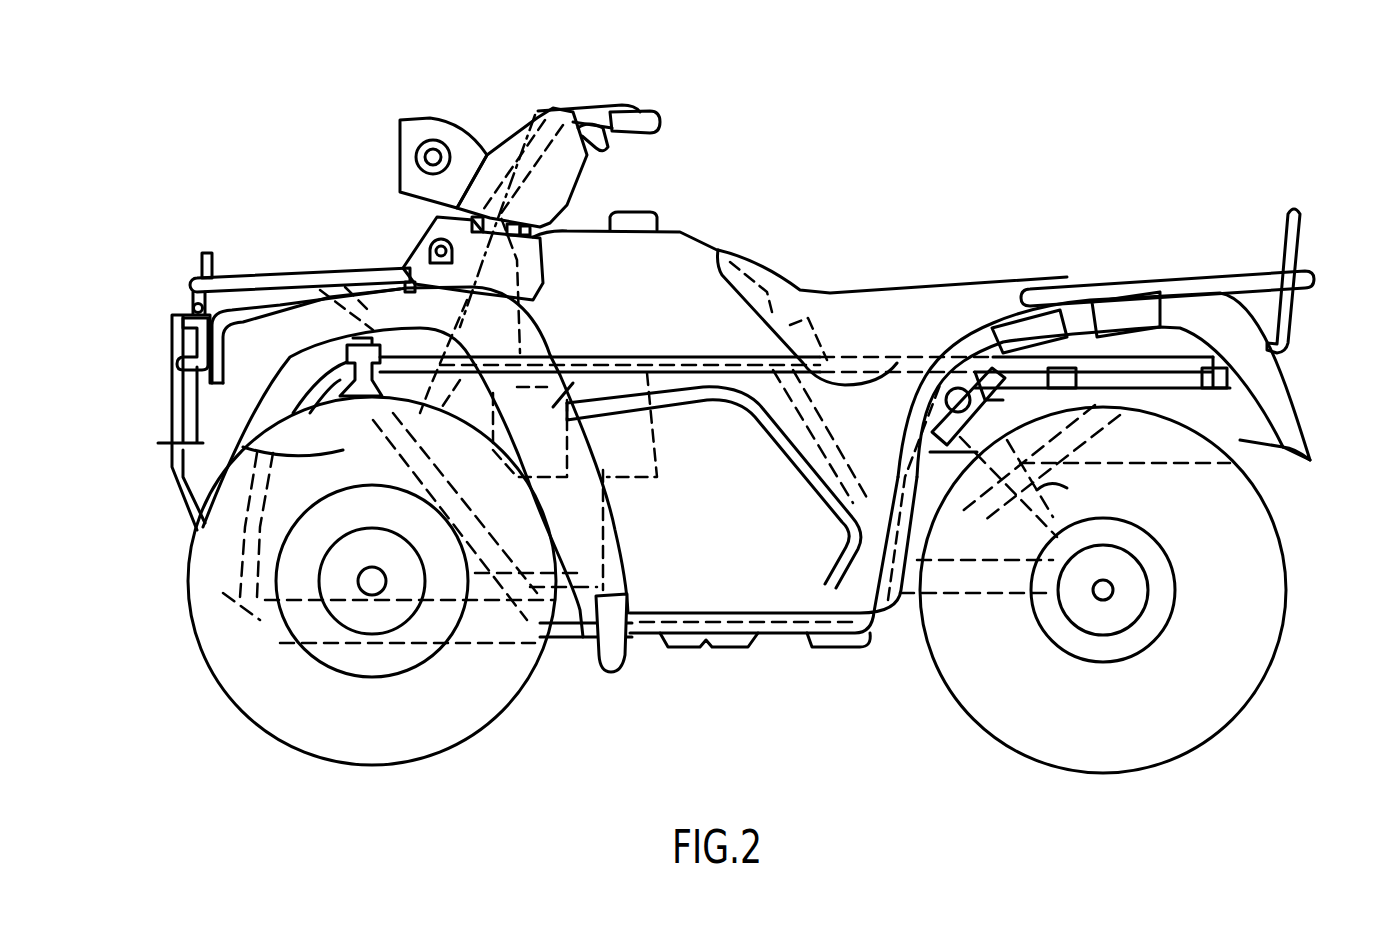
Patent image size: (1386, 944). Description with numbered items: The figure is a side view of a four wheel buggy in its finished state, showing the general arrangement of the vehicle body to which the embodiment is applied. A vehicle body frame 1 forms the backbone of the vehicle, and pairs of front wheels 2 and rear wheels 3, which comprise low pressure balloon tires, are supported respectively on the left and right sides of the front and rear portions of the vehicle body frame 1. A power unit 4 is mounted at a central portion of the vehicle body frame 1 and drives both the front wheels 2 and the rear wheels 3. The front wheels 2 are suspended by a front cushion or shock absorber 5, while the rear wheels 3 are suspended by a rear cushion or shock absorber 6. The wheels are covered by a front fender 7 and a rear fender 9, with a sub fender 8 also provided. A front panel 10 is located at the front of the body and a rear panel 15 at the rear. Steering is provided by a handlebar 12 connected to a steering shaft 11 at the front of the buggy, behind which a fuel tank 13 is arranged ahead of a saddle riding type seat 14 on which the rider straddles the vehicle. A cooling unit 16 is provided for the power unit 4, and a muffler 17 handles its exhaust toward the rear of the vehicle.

The vehicle body frame 1 is at (580, 656).
The front wheels 2 is at (283, 720).
The rear wheels 3 is at (997, 710).
The power unit 4 is at (777, 585).
The front cushion 5 is at (243, 448).
The rear cushion 6 is at (1067, 488).
The front fender 7 is at (273, 330).
The sub fender 8 is at (697, 637).
The rear fender 9 is at (980, 350).
The front panel 10 is at (402, 263).
The steering shaft 11 is at (430, 233).
The handlebar 12 is at (655, 118).
The fuel tank 13 is at (680, 255).
The saddle riding type seat 14 is at (837, 313).
The rear panel 15 is at (887, 400).
The cooling unit 16 is at (578, 350).
The muffler 17 is at (1263, 447).